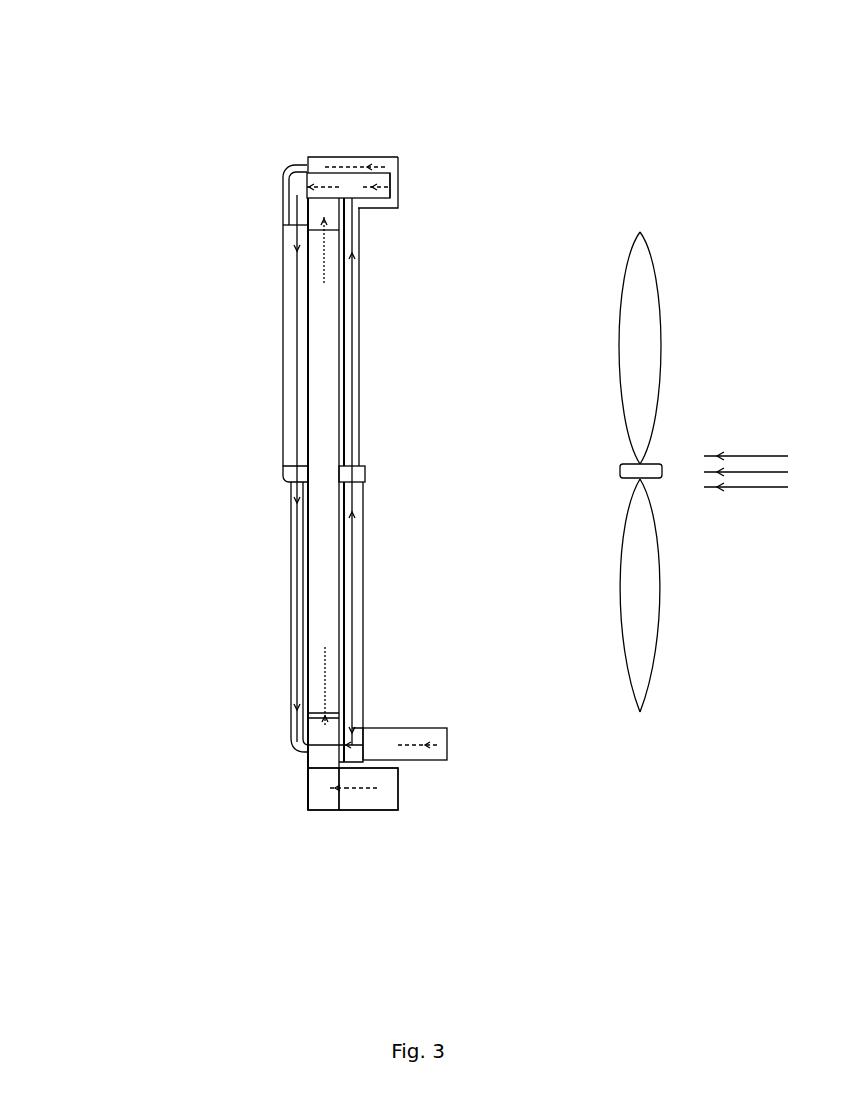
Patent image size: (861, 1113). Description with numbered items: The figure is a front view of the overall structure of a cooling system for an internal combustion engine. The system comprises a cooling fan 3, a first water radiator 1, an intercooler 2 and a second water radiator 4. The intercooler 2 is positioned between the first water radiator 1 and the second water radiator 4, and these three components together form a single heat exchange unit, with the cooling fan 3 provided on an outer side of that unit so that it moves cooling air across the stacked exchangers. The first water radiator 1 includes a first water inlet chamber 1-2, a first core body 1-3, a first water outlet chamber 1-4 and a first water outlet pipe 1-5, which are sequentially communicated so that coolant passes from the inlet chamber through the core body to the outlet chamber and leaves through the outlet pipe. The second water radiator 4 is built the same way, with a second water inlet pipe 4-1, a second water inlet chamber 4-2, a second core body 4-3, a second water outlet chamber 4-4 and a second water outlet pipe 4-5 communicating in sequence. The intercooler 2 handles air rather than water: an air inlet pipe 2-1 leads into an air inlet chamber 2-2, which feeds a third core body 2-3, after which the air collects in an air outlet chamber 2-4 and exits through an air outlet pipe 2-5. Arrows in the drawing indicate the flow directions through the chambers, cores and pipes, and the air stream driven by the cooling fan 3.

The first water radiator 1 is at (372, 528).
The first water inlet chamber 1-2 is at (547, 438).
The first core body 1-3 is at (352, 607).
The first water outlet chamber 1-4 is at (363, 727).
The first water outlet pipe 1-5 is at (440, 745).
The intercooler 2 is at (307, 773).
The air inlet pipe 2-1 is at (353, 312).
The air inlet chamber 2-2 is at (328, 795).
The third core body 2-3 is at (322, 437).
The air outlet chamber 2-4 is at (333, 157).
The air outlet pipe 2-5 is at (384, 157).
The cooling fan 3 is at (630, 313).
The second water radiator 4 is at (208, 230).
The second water inlet pipe 4-1 is at (330, 180).
The second water inlet chamber 4-2 is at (283, 197).
The second core body 4-3 is at (305, 408).
The second water outlet chamber 4-4 is at (285, 473).
The second water outlet pipe 4-5 is at (293, 590).